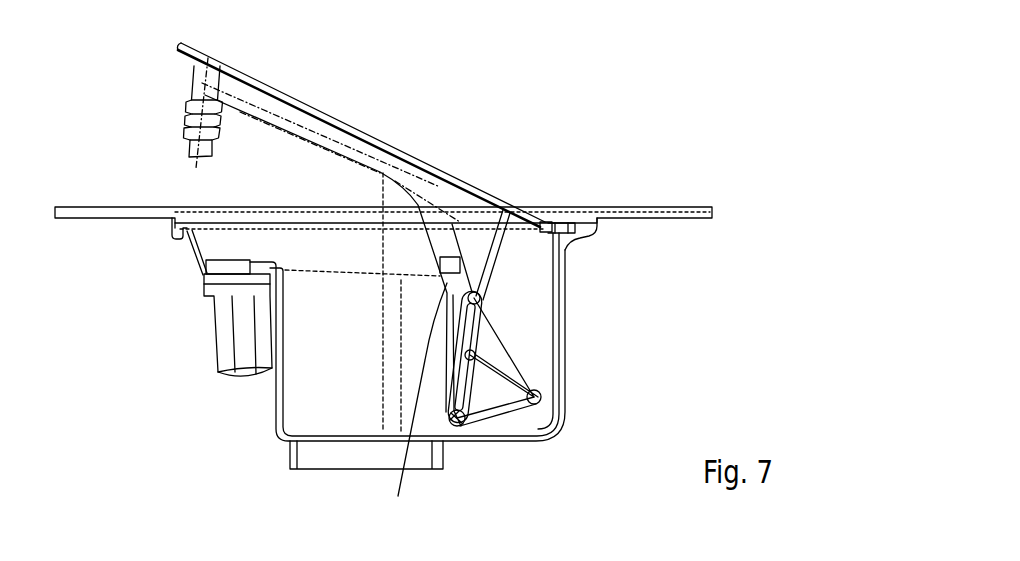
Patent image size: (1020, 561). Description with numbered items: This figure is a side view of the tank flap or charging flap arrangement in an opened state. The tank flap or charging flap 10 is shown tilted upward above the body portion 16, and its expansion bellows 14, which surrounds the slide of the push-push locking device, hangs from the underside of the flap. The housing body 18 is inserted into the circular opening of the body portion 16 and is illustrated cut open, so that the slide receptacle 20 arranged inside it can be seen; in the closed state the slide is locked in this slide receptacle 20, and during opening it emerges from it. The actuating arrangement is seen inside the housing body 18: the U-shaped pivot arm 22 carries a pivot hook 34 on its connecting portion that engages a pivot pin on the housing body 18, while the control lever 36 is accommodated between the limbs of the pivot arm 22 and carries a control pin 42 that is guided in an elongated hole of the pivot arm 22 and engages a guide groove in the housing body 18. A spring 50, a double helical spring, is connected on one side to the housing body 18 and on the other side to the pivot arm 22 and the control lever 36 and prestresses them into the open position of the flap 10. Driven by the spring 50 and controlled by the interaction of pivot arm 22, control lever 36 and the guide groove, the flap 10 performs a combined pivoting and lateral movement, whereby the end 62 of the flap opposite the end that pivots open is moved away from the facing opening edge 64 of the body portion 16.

The tank flap or charging flap 10 is at (372, 142).
The expansion bellows 14 is at (185, 143).
The body portion 16 is at (685, 217).
The housing body 18 is at (278, 408).
The slide receptacle 20 is at (212, 322).
The pivot arm 22 is at (482, 296).
The pivot hook 34 is at (462, 427).
The control lever 36 is at (338, 313).
The control pin 42 is at (478, 353).
The spring 50 is at (546, 397).
The end of the tank flap or charging flap 62 is at (543, 222).
The opening edge 64 is at (590, 222).